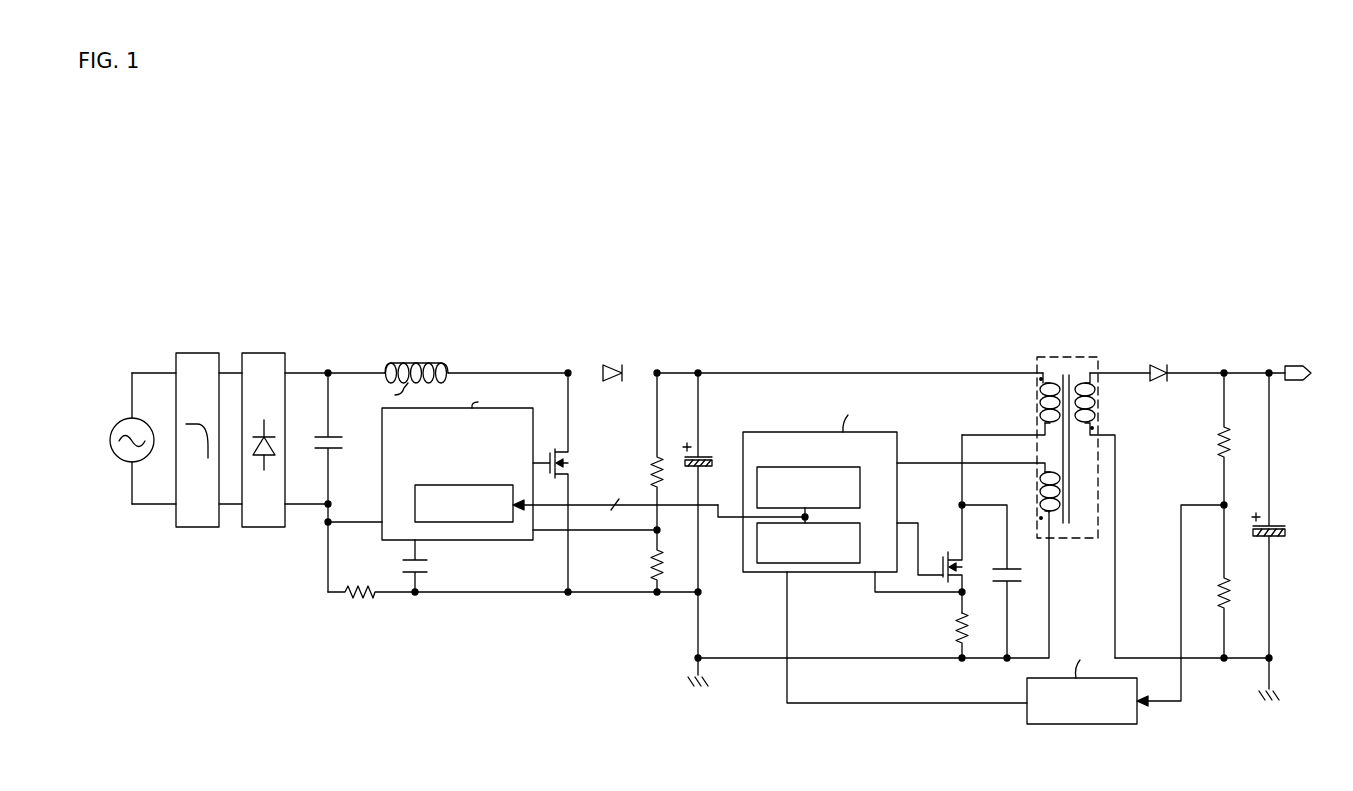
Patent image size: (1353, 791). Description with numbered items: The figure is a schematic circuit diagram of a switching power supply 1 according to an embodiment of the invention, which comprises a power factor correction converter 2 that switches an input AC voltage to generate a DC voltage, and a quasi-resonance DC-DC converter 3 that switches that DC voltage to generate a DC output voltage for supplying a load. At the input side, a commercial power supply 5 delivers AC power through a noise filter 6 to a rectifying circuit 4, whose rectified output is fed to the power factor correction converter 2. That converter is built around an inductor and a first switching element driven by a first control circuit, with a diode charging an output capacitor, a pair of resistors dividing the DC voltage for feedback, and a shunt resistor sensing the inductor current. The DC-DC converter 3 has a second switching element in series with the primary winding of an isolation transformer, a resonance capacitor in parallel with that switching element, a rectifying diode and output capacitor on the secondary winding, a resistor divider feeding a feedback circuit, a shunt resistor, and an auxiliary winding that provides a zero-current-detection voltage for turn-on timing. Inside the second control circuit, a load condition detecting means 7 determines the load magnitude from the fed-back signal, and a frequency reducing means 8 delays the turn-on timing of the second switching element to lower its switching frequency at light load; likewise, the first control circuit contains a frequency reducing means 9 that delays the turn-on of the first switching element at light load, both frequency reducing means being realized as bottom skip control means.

The switching power supply 1 is at (1071, 311).
The power factor correction converter 2 is at (652, 352).
The DC-DC converter 3 is at (1267, 349).
The rectifying circuit 4 is at (262, 352).
The commercial power supply 5 is at (147, 430).
The noise filter 6 is at (198, 352).
The load condition detecting means 7 is at (757, 553).
The frequency reducing means 8 is at (757, 488).
The frequency reducing means 9 is at (415, 493).